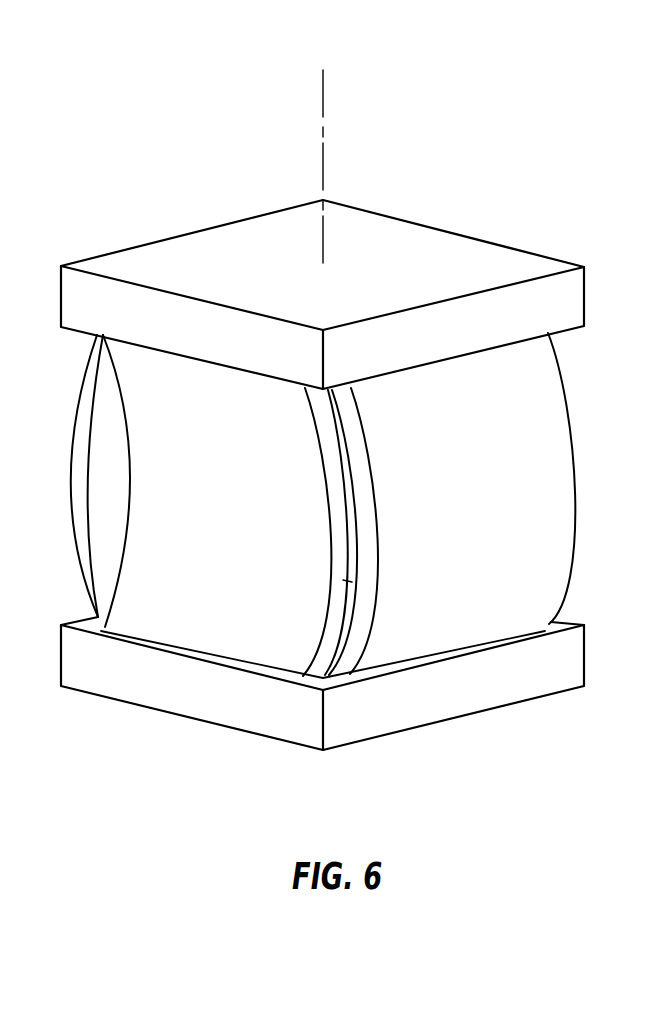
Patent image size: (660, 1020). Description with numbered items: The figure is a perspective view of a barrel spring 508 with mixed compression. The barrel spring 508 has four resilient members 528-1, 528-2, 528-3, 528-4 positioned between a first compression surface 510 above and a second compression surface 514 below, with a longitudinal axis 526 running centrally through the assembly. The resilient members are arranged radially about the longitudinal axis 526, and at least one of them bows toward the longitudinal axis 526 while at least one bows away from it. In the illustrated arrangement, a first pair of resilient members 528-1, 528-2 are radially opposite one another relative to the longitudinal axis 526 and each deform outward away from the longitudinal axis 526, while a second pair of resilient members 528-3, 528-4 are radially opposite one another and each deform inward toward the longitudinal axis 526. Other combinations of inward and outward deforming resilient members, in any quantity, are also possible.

The barrel spring 508 is at (326, 394).
The first compression surface 510 is at (347, 294).
The second compression surface 514 is at (347, 683).
The longitudinal axis 526 is at (360, 152).
The resilient member 528-1 is at (599, 478).
The resilient member 528-2 is at (50, 476).
The resilient member 528-3 is at (77, 481).
The resilient member 528-4 is at (476, 500).